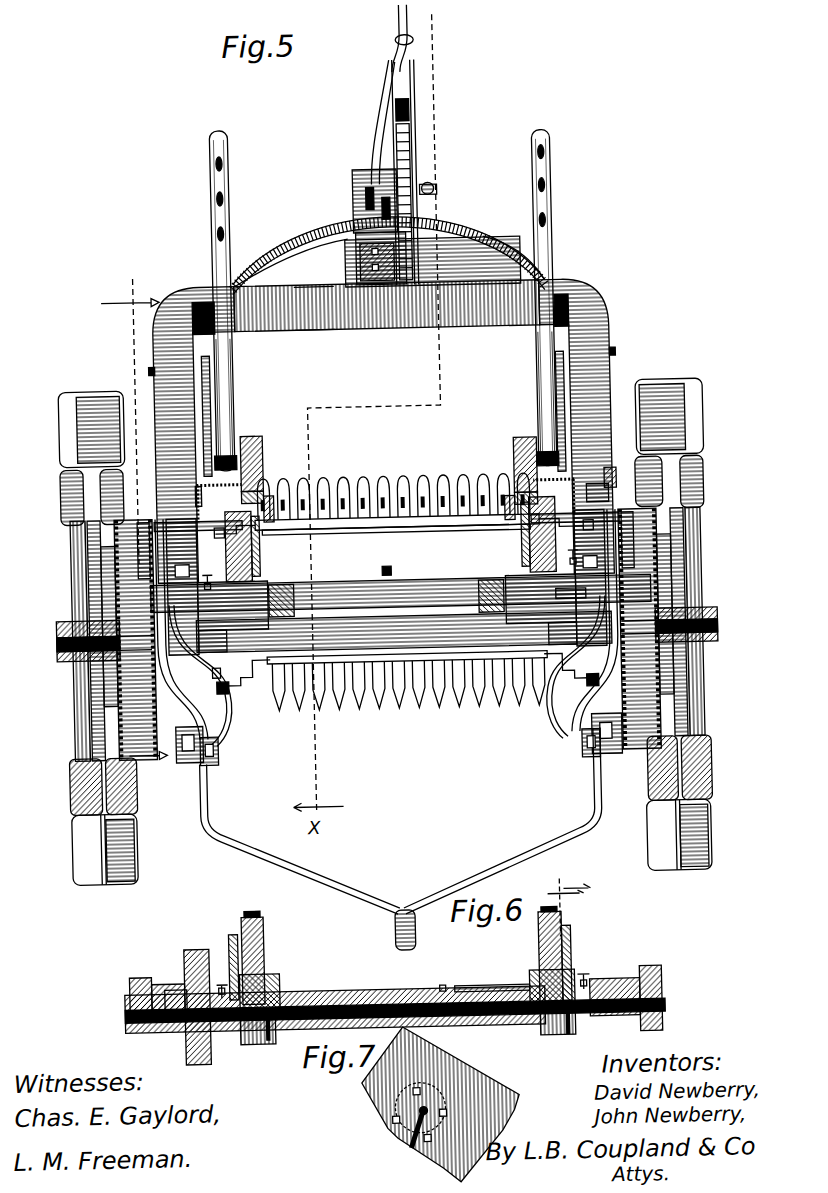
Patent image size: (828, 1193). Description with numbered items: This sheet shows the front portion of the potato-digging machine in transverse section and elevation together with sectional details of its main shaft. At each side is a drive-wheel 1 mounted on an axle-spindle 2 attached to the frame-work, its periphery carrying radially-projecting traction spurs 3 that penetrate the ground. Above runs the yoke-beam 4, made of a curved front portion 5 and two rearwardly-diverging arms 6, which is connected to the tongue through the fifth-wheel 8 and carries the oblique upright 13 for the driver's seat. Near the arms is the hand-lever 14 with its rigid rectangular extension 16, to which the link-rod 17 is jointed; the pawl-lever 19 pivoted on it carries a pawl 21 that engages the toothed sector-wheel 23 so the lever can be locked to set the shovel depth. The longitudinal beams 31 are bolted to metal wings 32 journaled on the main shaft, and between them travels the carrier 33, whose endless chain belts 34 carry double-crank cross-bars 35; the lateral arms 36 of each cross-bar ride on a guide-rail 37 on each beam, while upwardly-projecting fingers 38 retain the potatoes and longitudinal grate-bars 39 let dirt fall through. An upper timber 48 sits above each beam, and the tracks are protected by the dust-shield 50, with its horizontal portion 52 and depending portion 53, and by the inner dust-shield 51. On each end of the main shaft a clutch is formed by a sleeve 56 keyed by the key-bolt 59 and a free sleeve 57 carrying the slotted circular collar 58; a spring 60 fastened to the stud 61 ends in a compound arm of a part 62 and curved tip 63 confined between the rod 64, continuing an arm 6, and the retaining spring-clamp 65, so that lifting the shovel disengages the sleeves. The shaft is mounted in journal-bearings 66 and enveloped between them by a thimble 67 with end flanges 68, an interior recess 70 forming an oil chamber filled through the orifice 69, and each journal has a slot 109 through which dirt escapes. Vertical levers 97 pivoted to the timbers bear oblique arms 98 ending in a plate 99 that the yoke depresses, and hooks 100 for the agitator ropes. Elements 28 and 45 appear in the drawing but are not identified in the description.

In FIG. 5, the drive-wheels 1 is at (712, 772).
In FIG. 5, the axle-spindle 2 is at (716, 628).
In FIG. 5, the traction blades or spurs 3 is at (706, 787).
In FIG. 5, the yoke-beam 4 is at (352, 303).
In FIG. 5, the curved front portion 5 is at (361, 188).
In FIG. 5, the arms or prongs 6 is at (620, 738).
In FIG. 5, the fifth-wheel 8 is at (134, 523).
In FIG. 5, the oblique upright 13 is at (348, 298).
In FIG. 5, the hand-lever 14 is at (428, 76).
In FIG. 5, the rigid rectangular extension 16 is at (380, 188).
In FIG. 5, the link-rod 17 is at (494, 233).
In FIG. 5, the pawl-lever 19 is at (411, 30).
In FIG. 5, the pawl 21 is at (422, 112).
In FIG. 5, the toothed sector-wheel 23 is at (421, 151).
In FIG. 5, the cross head 28 is at (445, 254).
In FIG. 5, the beam or timber 31 is at (528, 545).
In FIG. 6, the beam or timber 31 is at (531, 937).
In FIG. 5, the metal wings or brackets 32 is at (522, 535).
In FIG. 6, the metal wings or brackets 32 is at (562, 952).
In FIG. 7, the metal wings or brackets 32 is at (441, 1104).
In FIG. 5, the carrier 33 is at (406, 585).
In FIG. 5, the endless chain belts 34 is at (582, 688).
In FIG. 5, the cross-bars 35 is at (372, 526).
In FIG. 5, the arms 36 is at (401, 581).
In FIG. 5, the guide-rail 37 is at (515, 482).
In FIG. 6, the guide-rail 37 is at (403, 903).
In FIG. 5, the fingers 38 is at (455, 690).
In FIG. 5, the grate-bars 39 is at (482, 530).
In FIG. 5, the bolt 45 is at (218, 674).
In FIG. 5, the upper beam or timber 48 is at (522, 440).
In FIG. 5, the dust-shield 50 is at (568, 480).
In FIG. 5, the dust-shield 51 is at (508, 500).
In FIG. 5, the horizontal portion 52 is at (606, 482).
In FIG. 5, the vertical portion 53 is at (615, 475).
In FIG. 5, the sleeve 56 is at (387, 632).
In FIG. 6, the sleeve 56 is at (582, 985).
In FIG. 5, the sleeve 57 is at (387, 582).
In FIG. 6, the sleeve 57 is at (604, 985).
In FIG. 5, the circular collar 58 is at (670, 586).
In FIG. 6, the circular collar 58 is at (612, 1022).
In FIG. 5, the key-bolt 59 is at (395, 560).
In FIG. 6, the key-bolt 59 is at (574, 978).
In FIG. 5, the spring 60 is at (660, 662).
In FIG. 5, the stud 61 is at (614, 508).
In FIG. 5, the arm part 62 is at (572, 690).
In FIG. 5, the curved tip 63 is at (584, 745).
In FIG. 5, the rod 64 is at (204, 784).
In FIG. 5, the retaining spring-clamp 65 is at (196, 756).
In FIG. 5, the journal-bearings 66 is at (617, 763).
In FIG. 6, the journal-bearings 66 is at (550, 1038).
In FIG. 7, the journal-bearings 66 is at (403, 1112).
In FIG. 5, the spool or thimble 67 is at (400, 591).
In FIG. 6, the spool or thimble 67 is at (346, 990).
In FIG. 5, the circular flange 68 is at (386, 594).
In FIG. 6, the circular flange 68 is at (522, 1022).
In FIG. 5, the orifice 69 is at (375, 571).
In FIG. 6, the orifice 69 is at (432, 974).
In FIG. 5, the interior circular recess 70 is at (570, 585).
In FIG. 6, the interior circular recess 70 is at (452, 988).
In FIG. 5, the vertical levers 97 is at (541, 322).
In FIG. 5, the obliquely-projecting arms 98 is at (566, 402).
In FIG. 5, the horizontal plate 99 is at (621, 355).
In FIG. 5, the cleat or hook 100 is at (561, 212).
In FIG. 6, the slot 109 is at (560, 1038).
In FIG. 7, the slot 109 is at (398, 1148).